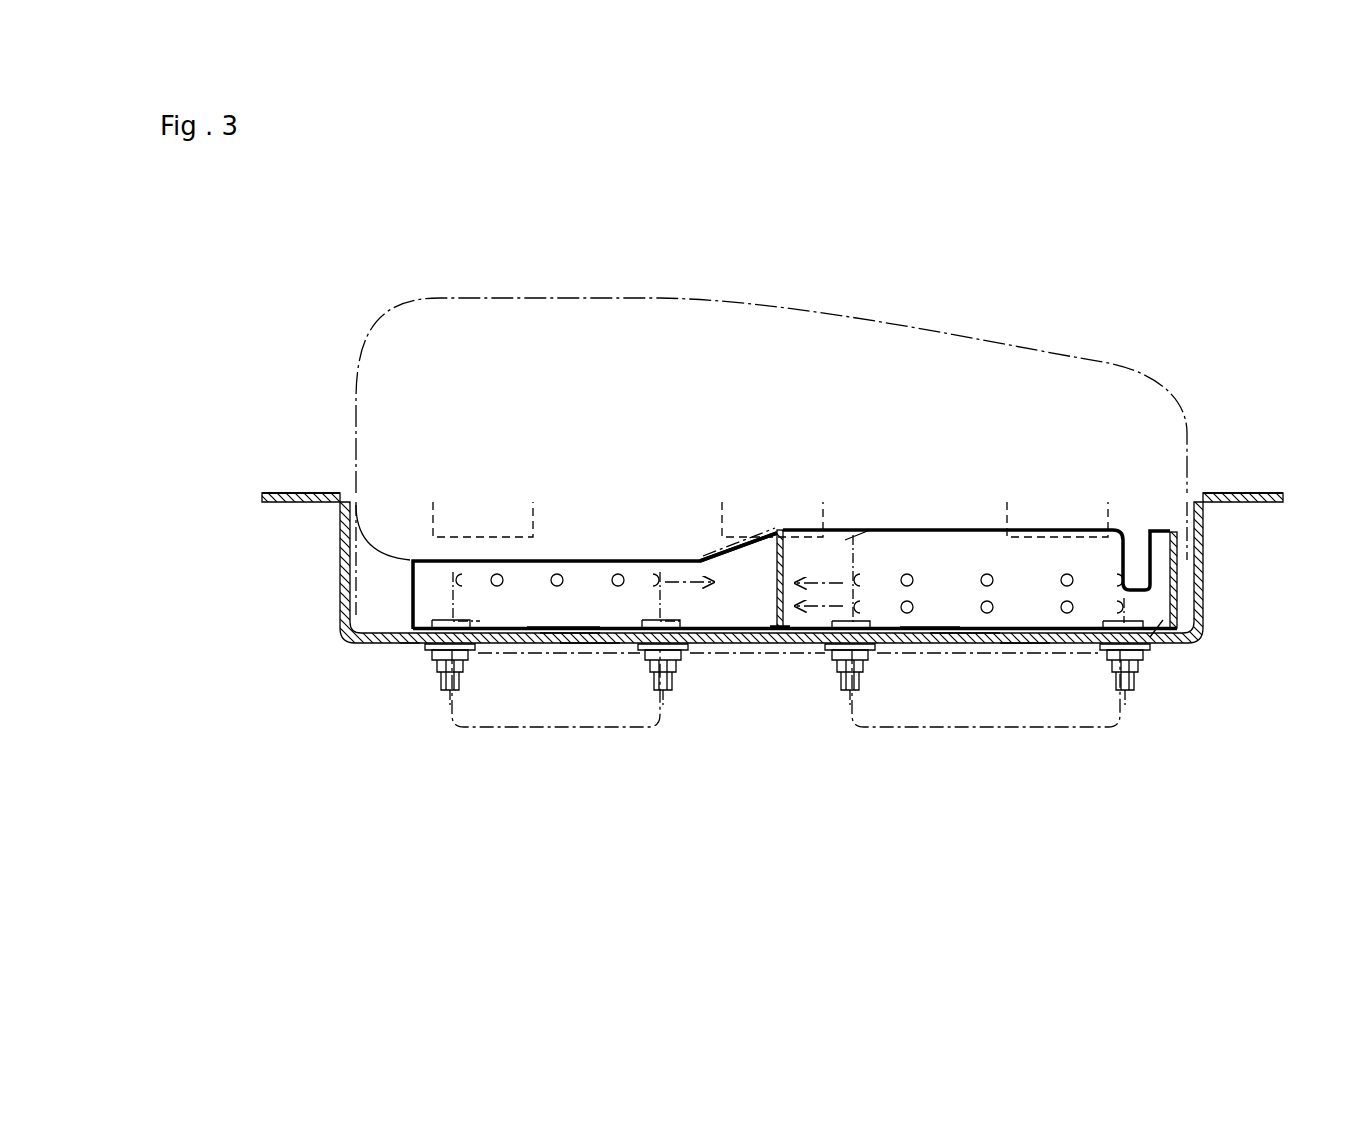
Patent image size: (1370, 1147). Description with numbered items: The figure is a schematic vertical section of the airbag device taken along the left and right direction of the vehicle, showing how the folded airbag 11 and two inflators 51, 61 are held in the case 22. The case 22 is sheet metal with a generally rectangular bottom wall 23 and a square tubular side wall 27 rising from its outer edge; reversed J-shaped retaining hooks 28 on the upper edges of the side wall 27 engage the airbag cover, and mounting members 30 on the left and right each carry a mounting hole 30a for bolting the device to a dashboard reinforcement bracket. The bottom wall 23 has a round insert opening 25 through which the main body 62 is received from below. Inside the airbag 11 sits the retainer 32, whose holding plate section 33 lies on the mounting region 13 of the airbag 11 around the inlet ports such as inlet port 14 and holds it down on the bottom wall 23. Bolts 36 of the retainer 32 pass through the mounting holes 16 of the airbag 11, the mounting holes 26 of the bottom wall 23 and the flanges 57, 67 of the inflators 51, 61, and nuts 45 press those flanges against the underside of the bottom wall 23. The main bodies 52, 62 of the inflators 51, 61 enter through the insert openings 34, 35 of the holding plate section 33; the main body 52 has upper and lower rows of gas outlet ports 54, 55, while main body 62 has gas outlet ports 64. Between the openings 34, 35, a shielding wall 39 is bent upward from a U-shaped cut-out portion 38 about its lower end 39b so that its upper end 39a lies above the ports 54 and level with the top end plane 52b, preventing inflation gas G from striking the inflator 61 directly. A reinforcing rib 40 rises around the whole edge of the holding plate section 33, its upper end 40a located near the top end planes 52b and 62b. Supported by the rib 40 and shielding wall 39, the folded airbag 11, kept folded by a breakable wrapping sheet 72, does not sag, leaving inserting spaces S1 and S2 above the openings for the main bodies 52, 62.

The airbag 11 is at (924, 385).
The mounting region 13 is at (715, 647).
The inlet port 14 is at (1025, 645).
The mounting holes 16 is at (801, 759).
The case 22 is at (737, 595).
The bottom wall 23 is at (765, 595).
The insert opening 25 is at (600, 645).
The mounting holes 26 is at (480, 656).
The side wall 27 is at (765, 595).
The retaining hooks 28 is at (480, 537).
The mounting members 30 is at (772, 595).
The mounting hole 30a is at (296, 500).
The retainer 32 is at (1258, 586).
The holding plate section 33 is at (1150, 637).
The insert opening 34 is at (958, 645).
The insert opening 35 is at (550, 645).
The bolts 36 is at (786, 761).
The cut-out portion 38 is at (778, 542).
The shielding wall 39 is at (787, 573).
The upper end 39a is at (776, 530).
The lower end 39b is at (770, 652).
The reinforcing rib 40 is at (1178, 560).
The upper end 40a is at (1173, 560).
The nuts 45 is at (802, 761).
The inflator 51 is at (1042, 710).
The main body 52 is at (976, 577).
The top end plane 52b is at (955, 530).
The gas outlet ports 54 is at (907, 573).
The gas outlet ports 55 is at (863, 609).
The flange 57 is at (842, 735).
The inflator 61 is at (572, 720).
The main body 62 is at (795, 640).
The top end plane 62b is at (557, 574).
The gas outlet ports 64 is at (618, 574).
The flange 67 is at (410, 648).
The wrapping sheet 72 is at (352, 545).
The inserting space S1 is at (853, 535).
The inserting space S2 is at (427, 597).
The inflation gas G is at (754, 580).